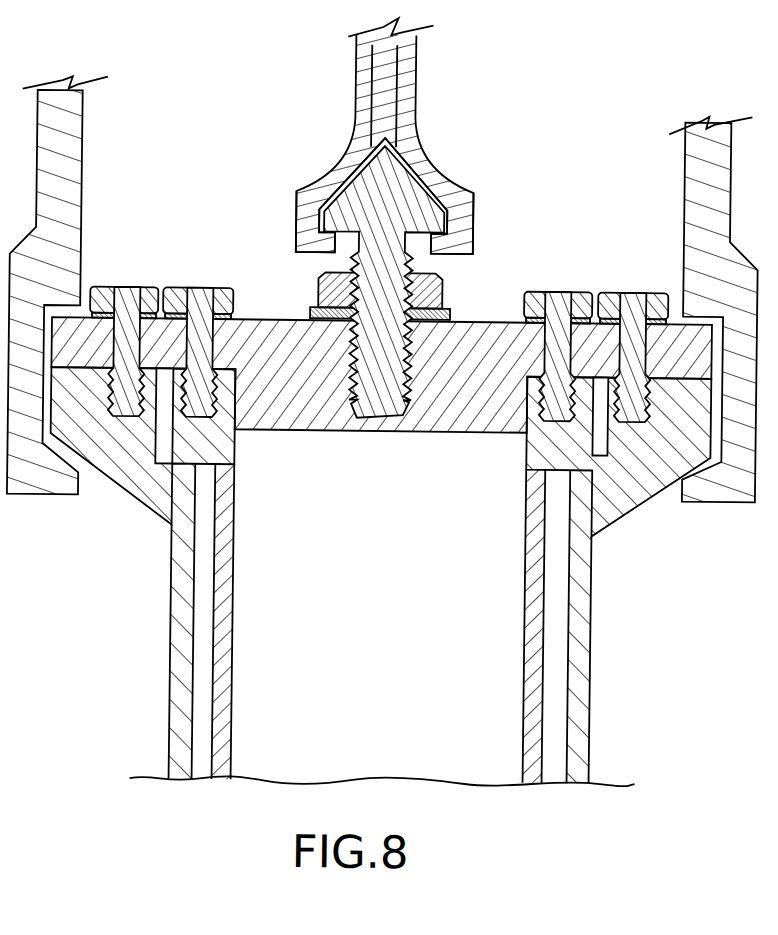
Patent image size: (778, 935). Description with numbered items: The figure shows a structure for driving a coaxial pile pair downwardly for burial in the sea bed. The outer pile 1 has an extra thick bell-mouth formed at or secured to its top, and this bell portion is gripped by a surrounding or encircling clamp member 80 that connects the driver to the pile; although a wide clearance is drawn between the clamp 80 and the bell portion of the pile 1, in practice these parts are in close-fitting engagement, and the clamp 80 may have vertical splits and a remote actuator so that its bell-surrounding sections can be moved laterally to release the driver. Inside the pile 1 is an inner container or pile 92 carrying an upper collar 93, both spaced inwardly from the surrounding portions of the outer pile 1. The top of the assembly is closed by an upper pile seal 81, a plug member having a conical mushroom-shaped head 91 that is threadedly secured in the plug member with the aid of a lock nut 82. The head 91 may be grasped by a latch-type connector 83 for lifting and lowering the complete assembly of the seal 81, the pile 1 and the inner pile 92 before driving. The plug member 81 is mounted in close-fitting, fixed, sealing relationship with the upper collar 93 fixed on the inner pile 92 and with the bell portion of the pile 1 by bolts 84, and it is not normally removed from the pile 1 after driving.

The pile 1 is at (597, 680).
The clamp member 80 is at (80, 141).
The upper pile seal 81 is at (388, 434).
The lock nut 82 is at (440, 283).
The latch-type connector 83 is at (413, 77).
The bolts 84 is at (121, 290).
The conical mushroom-shaped head 91 is at (390, 180).
The inner container or pile 92 is at (531, 598).
The upper collar 93 is at (528, 447).